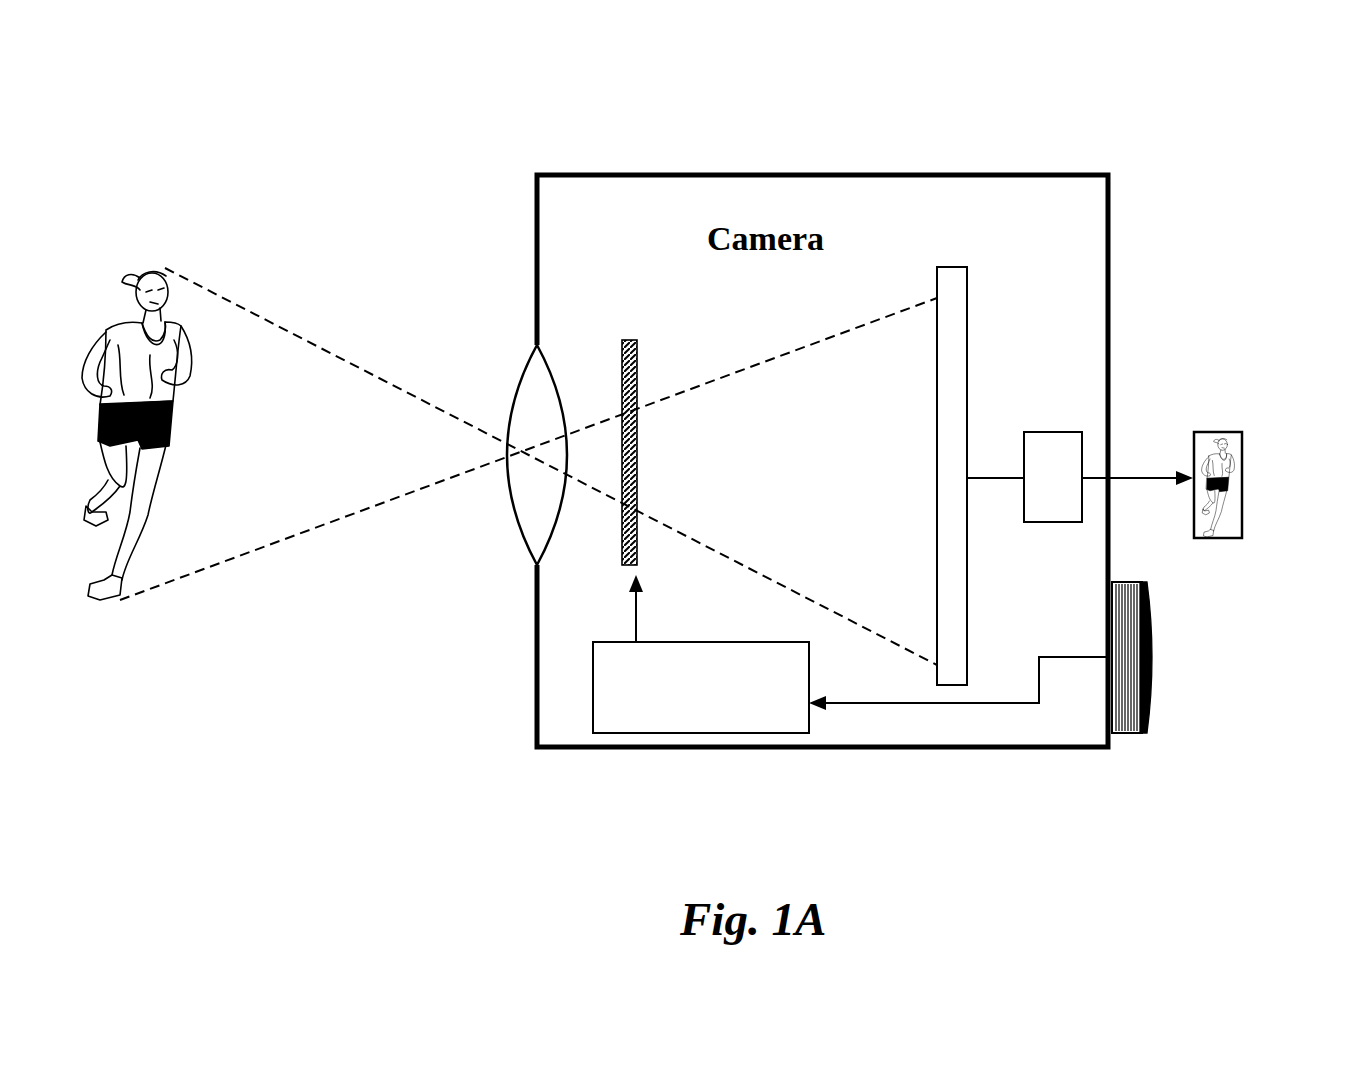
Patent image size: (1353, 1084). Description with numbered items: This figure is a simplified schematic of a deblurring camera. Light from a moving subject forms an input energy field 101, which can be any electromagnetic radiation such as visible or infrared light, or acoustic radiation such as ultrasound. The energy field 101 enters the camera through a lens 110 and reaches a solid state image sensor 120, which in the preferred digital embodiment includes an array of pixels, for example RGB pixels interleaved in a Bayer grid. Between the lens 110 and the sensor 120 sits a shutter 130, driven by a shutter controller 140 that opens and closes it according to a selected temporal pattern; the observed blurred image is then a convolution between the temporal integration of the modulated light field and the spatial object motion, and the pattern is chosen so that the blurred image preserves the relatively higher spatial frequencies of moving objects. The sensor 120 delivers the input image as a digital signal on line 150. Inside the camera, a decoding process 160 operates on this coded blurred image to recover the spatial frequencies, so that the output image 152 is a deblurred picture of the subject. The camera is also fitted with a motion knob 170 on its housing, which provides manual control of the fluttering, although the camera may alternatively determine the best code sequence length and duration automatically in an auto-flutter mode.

The input energy field 101 is at (437, 480).
The lens 110 is at (523, 373).
The solid state image sensor 120 is at (967, 312).
The shutter 130 is at (631, 340).
The shutter controller 140 is at (665, 733).
The line 150 is at (1010, 478).
The output image 152 is at (1210, 432).
The decoding process 160 is at (1053, 477).
The motion knob 170 is at (1153, 640).